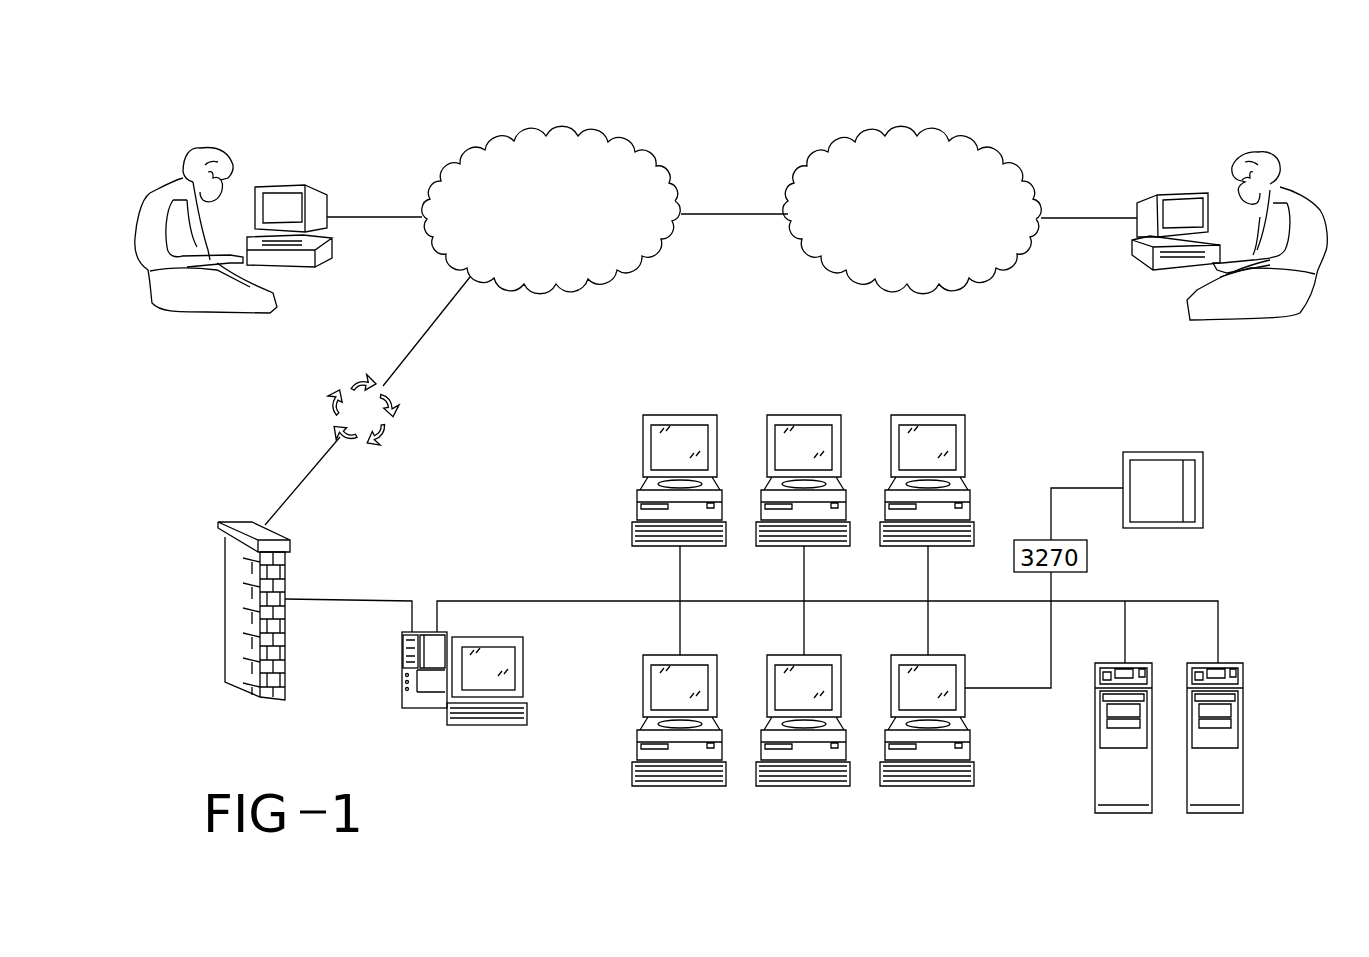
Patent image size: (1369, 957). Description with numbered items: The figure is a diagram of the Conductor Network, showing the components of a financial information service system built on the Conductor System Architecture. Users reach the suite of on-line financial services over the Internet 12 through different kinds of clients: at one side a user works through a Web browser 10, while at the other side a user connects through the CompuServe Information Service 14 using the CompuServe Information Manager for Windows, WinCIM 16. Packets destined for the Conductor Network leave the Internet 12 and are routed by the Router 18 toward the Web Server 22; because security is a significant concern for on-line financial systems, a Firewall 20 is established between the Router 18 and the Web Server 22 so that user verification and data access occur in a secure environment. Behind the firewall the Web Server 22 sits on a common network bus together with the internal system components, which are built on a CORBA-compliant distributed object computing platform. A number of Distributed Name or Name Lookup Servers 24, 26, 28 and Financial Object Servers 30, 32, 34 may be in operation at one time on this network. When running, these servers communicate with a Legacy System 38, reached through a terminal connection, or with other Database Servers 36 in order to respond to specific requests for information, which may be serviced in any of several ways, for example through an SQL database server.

The Web browser 10 is at (283, 187).
The Internet 12 is at (485, 142).
The CompuServe Information Service 14 is at (977, 146).
The CompuServe Information Manager for Windows (WinCIM) 16 is at (1180, 193).
The Router 18 is at (390, 440).
The Firewall 20 is at (225, 585).
The Web Server 22 is at (476, 726).
The Distributed Name Server 24 is at (668, 415).
The Distributed Name Server 26 is at (792, 415).
The Distributed Name Server 28 is at (916, 415).
The Financial Object Server 30 is at (680, 788).
The Financial Object Server 32 is at (802, 788).
The Financial Object Server 34 is at (930, 788).
The Database Servers 36 is at (1243, 728).
The Legacy System 38 is at (1173, 452).